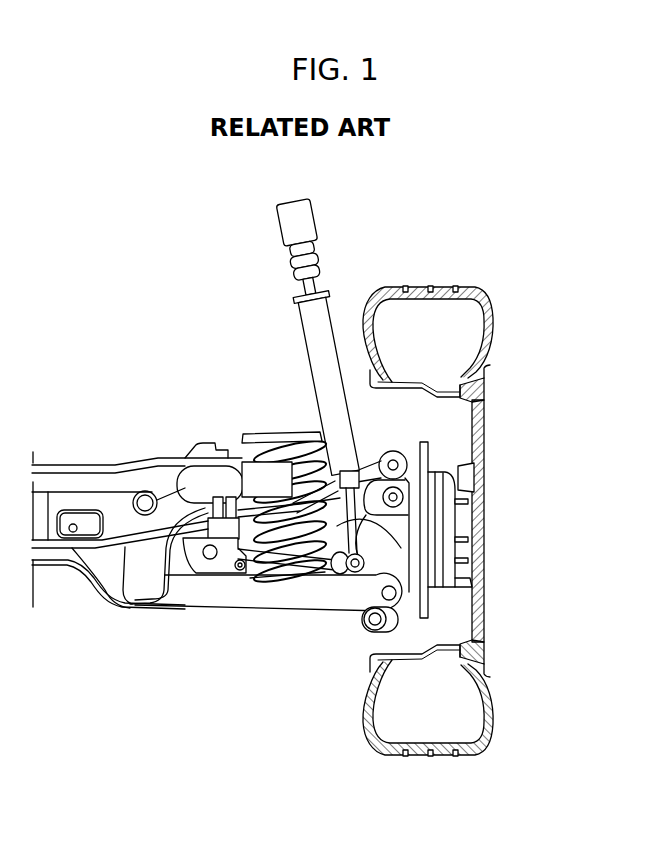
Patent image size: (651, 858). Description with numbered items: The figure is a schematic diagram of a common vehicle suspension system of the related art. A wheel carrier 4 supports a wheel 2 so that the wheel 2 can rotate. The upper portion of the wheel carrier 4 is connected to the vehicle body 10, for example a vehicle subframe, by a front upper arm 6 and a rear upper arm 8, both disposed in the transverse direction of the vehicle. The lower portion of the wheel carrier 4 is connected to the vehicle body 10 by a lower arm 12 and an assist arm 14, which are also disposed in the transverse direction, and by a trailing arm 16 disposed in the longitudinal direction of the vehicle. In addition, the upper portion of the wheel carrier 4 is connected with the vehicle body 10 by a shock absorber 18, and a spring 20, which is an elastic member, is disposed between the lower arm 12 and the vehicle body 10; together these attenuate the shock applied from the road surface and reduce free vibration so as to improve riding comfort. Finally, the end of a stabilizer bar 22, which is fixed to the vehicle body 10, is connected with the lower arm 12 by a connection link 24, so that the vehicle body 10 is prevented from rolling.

The wheel 2 is at (473, 647).
The wheel carrier 4 is at (442, 560).
The front upper arm 6 is at (404, 496).
The rear upper arm 8 is at (322, 470).
The vehicle body 10 is at (76, 500).
The lower arm 12 is at (212, 592).
The assist arm 14 is at (282, 562).
The trailing arm 16 is at (370, 624).
The shock absorber 18 is at (310, 330).
The spring 20 is at (268, 450).
The stabilizer bar 22 is at (78, 550).
The connection link 24 is at (350, 535).